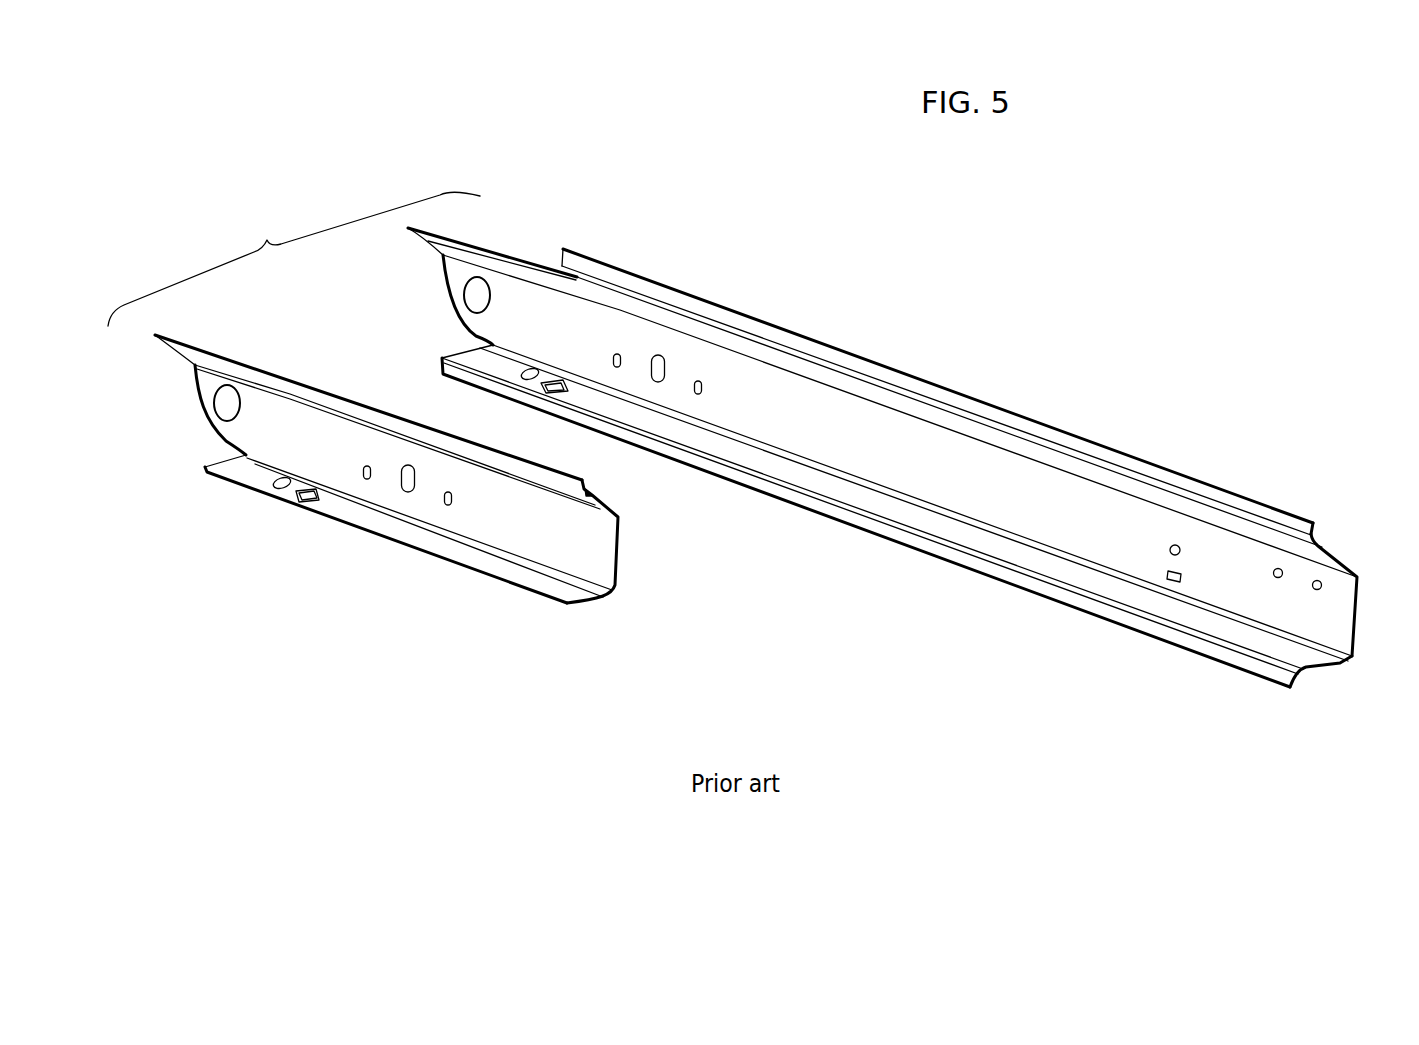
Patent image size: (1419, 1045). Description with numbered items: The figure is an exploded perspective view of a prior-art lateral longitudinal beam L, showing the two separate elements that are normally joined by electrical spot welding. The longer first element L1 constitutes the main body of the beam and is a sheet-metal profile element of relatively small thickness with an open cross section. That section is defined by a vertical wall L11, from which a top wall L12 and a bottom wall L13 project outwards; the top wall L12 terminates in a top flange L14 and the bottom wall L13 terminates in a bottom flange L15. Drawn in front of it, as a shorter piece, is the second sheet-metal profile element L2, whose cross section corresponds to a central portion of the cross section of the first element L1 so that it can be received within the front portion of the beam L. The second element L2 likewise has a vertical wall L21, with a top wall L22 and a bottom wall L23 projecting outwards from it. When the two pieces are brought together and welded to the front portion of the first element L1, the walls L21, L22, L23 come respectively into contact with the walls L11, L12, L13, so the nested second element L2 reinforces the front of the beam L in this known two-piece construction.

The lateral longitudinal beam L is at (267, 240).
The first element L1 is at (882, 454).
The vertical wall L11 is at (845, 423).
The top wall L12 is at (1228, 516).
The bottom wall L13 is at (1163, 608).
The top flange L14 is at (1048, 430).
The bottom flange L15 is at (952, 552).
The second sheet-metal profile element L2 is at (428, 490).
The vertical wall L21 is at (596, 535).
The top wall L22 is at (353, 412).
The bottom wall L23 is at (500, 562).